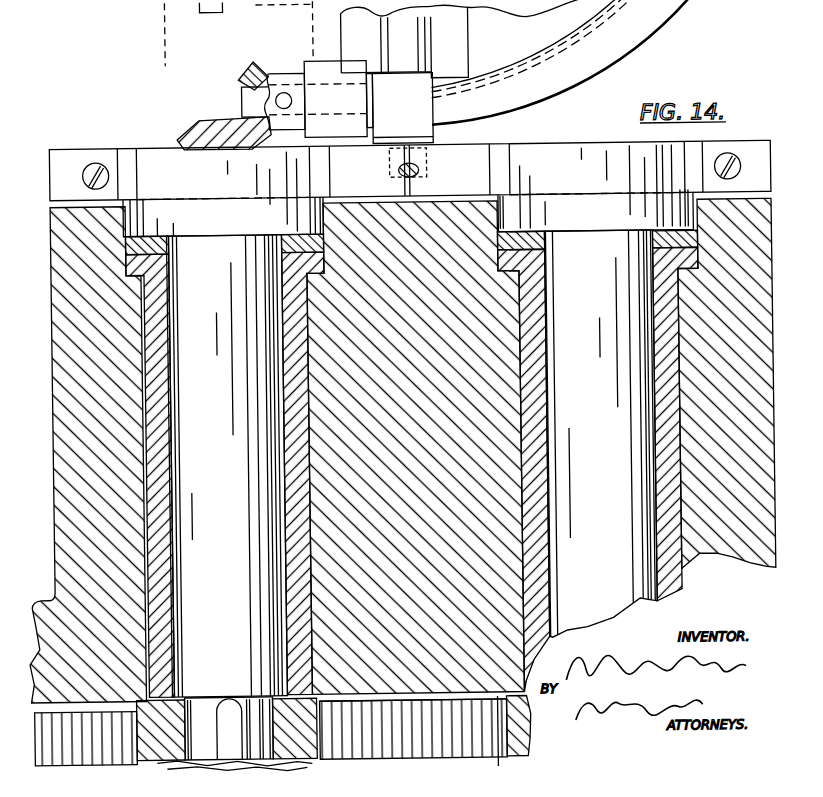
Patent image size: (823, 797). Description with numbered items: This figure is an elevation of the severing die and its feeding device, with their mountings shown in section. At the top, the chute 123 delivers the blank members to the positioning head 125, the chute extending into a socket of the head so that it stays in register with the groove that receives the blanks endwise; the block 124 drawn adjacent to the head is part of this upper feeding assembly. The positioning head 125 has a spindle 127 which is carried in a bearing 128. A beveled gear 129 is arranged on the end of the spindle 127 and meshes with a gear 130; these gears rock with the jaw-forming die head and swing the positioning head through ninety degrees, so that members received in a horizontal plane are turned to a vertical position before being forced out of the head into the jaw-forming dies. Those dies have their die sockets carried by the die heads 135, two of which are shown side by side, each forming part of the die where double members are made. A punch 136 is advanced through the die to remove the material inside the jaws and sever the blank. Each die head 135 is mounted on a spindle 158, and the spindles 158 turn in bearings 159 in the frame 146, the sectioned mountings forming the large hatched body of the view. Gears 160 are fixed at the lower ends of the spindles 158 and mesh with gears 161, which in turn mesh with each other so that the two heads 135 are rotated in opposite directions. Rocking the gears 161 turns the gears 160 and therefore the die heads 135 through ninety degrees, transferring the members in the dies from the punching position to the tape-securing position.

The chute 123 is at (622, 23).
The block 124 is at (427, 118).
The positioning head 125 is at (413, 88).
The spindle 127 is at (256, 95).
The bearing 128 is at (322, 77).
The beveled gear 129 is at (262, 66).
The gear 130 is at (198, 122).
The die head 135 is at (113, 151).
The punch 136 is at (421, 166).
The frame body 146 is at (28, 593).
The spindle 158 is at (180, 437).
The bearing 159 is at (146, 360).
The gear 160 is at (186, 684).
The gear 161 is at (371, 700).